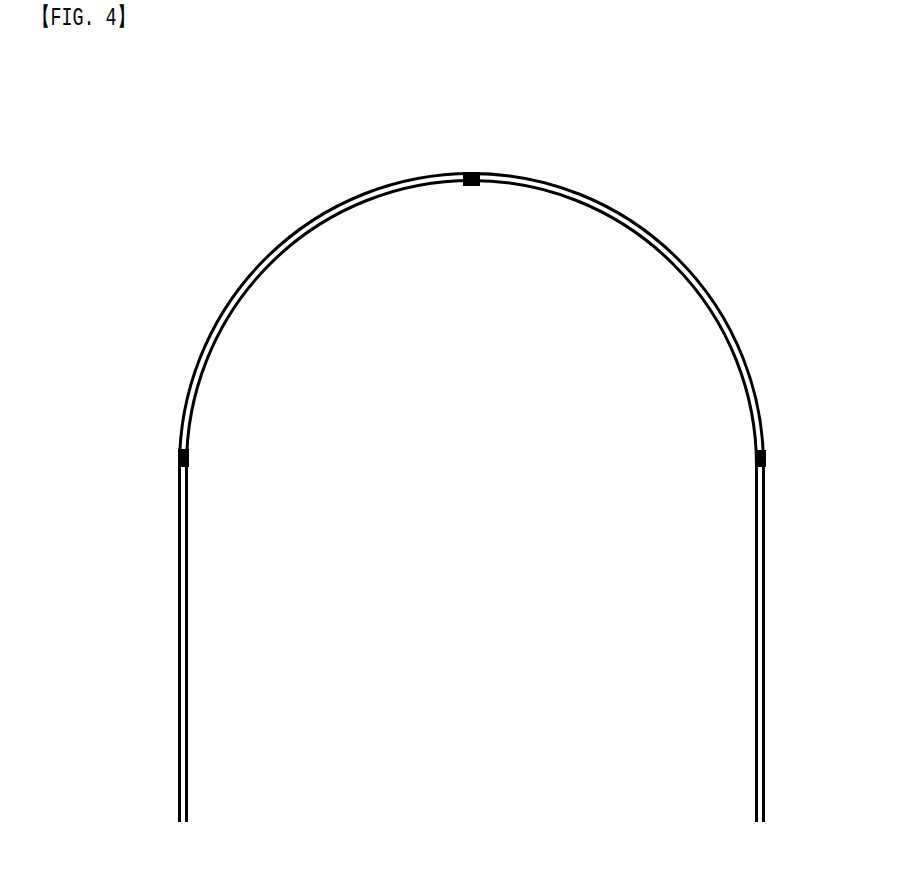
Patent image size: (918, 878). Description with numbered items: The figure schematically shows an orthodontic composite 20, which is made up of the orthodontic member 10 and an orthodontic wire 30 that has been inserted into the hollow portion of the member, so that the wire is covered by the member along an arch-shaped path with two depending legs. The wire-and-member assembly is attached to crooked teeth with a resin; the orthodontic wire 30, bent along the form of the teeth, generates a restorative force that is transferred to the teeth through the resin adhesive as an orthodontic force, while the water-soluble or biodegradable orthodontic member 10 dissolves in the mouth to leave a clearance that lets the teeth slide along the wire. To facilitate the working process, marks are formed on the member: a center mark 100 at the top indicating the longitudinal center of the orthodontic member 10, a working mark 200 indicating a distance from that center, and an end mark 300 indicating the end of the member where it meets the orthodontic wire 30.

The orthodontic composite 20 is at (746, 102).
The orthodontic member 10 is at (305, 228).
The working mark 200 is at (595, 198).
The orthodontic wire 30 is at (765, 589).
The center mark 100 is at (471, 172).
The end mark 300 is at (766, 456).